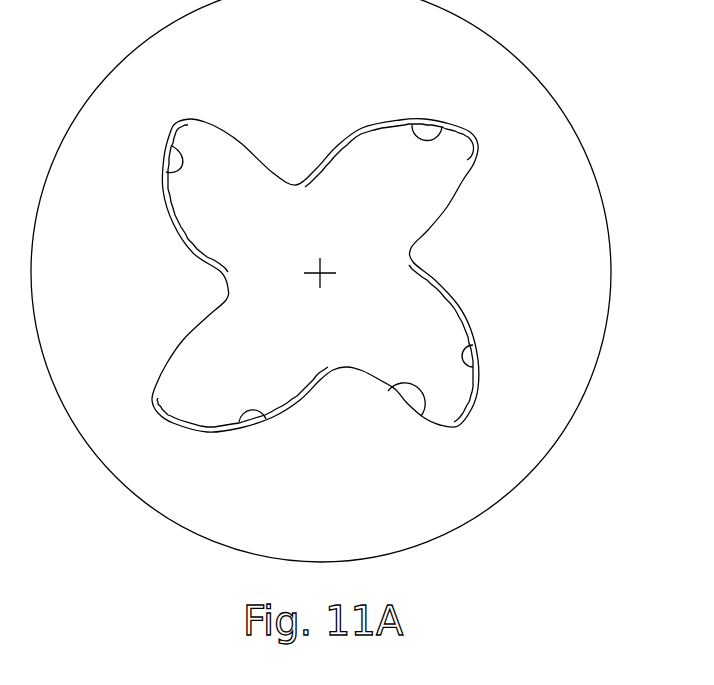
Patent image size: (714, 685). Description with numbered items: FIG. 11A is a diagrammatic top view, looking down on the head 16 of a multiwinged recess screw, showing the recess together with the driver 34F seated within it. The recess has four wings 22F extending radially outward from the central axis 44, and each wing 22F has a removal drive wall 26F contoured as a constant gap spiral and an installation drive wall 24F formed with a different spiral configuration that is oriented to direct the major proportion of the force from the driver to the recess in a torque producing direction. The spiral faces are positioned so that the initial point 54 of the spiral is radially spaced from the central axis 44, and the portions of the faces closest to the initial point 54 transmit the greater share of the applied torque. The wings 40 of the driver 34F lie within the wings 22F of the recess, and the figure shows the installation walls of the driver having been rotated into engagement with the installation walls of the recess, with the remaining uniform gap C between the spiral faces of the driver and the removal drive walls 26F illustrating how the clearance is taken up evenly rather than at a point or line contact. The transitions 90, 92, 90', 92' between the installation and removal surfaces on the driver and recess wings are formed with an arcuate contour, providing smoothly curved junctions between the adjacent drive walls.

The head 16 is at (103, 113).
The transition 92 is at (153, 242).
The wing 40 is at (196, 149).
The transition 90 is at (212, 296).
The removal drive wall 26F is at (433, 127).
The initial point 54 is at (466, 150).
The central axis 44 is at (317, 271).
The driver 34F is at (322, 326).
The transition 92' is at (352, 400).
The transition 90' is at (389, 273).
The installation drive wall 24F is at (419, 412).
The wing 22F is at (300, 383).
The gap C is at (222, 392).